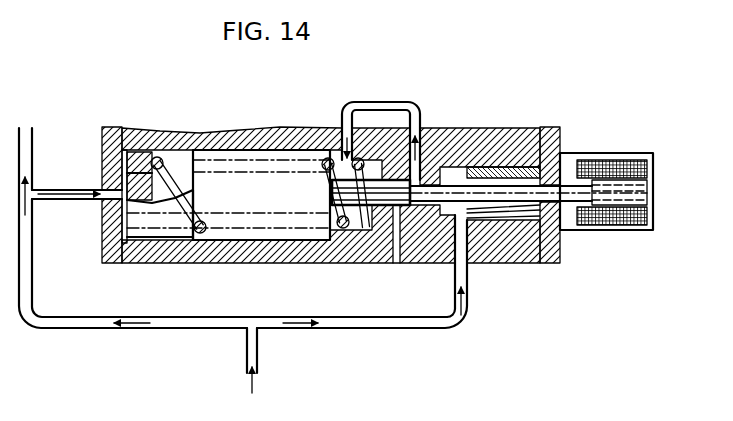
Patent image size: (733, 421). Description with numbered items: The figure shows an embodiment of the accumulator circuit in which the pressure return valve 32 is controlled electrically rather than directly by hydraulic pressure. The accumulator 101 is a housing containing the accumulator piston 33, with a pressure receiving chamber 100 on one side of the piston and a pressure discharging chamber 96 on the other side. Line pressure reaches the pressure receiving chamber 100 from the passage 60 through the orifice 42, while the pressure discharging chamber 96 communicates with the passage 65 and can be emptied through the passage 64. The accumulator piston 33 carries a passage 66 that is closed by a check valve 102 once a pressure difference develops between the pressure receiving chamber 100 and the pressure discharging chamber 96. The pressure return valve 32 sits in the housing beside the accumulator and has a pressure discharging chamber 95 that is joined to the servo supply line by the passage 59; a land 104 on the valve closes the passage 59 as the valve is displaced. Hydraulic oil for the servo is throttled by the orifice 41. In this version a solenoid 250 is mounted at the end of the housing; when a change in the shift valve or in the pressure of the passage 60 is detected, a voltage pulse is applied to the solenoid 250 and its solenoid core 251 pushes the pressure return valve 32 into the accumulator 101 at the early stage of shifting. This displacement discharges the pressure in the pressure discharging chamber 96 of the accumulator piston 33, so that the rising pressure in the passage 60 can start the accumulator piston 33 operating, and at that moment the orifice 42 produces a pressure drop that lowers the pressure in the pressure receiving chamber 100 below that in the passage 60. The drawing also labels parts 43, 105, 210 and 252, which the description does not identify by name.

The pressure return valve 32 is at (420, 200).
The accumulator piston 33 is at (172, 150).
The orifice 41 is at (258, 341).
The orifice 42 is at (60, 199).
The bypass conduit 43 is at (382, 102).
The passage 59 is at (375, 327).
The passage 60 is at (188, 327).
The passage 64 is at (398, 263).
The passage 65 is at (442, 93).
The passage 66 is at (143, 170).
The pressure discharging chamber 95 is at (458, 172).
The pressure discharging chamber 96 is at (296, 150).
The pressure receiving chamber 100 is at (122, 232).
The accumulator 101 is at (258, 130).
The check valve 102 is at (120, 181).
The land 104 is at (472, 212).
The piston rod 105 is at (333, 192).
The housing end wall 210 is at (550, 263).
The solenoid 250 is at (582, 153).
The solenoid core 251 is at (640, 190).
The solenoid coil 252 is at (648, 172).